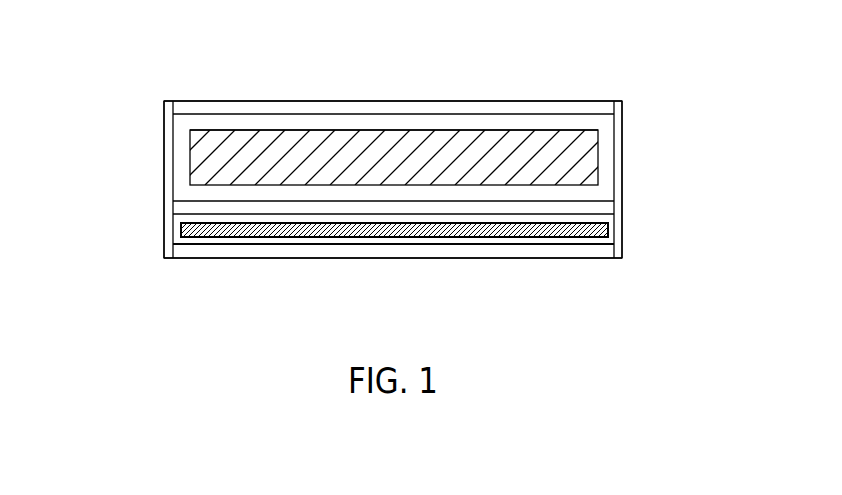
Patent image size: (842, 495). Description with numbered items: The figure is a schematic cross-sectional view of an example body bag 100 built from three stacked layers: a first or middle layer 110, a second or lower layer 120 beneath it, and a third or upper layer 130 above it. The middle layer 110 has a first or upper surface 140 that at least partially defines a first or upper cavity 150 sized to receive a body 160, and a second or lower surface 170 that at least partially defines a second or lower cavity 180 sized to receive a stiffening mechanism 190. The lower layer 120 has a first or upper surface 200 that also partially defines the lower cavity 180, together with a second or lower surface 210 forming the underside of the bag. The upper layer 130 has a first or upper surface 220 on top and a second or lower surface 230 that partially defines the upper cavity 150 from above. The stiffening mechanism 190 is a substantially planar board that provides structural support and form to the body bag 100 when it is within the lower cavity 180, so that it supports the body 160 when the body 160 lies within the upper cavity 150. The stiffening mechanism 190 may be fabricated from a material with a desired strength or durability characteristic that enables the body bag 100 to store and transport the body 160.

The body bag 100 is at (612, 289).
The middle layer 110 is at (605, 208).
The lower layer 120 is at (601, 250).
The upper layer 130 is at (605, 105).
The upper surface 140 is at (585, 196).
The upper cavity 150 is at (271, 126).
The body 160 is at (503, 153).
The lower surface 170 is at (585, 218).
The lower cavity 180 is at (260, 244).
The stiffening mechanism 190 is at (340, 238).
The upper surface 200 is at (184, 241).
The lower surface 210 is at (190, 261).
The upper surface 220 is at (195, 98).
The lower surface 230 is at (186, 119).